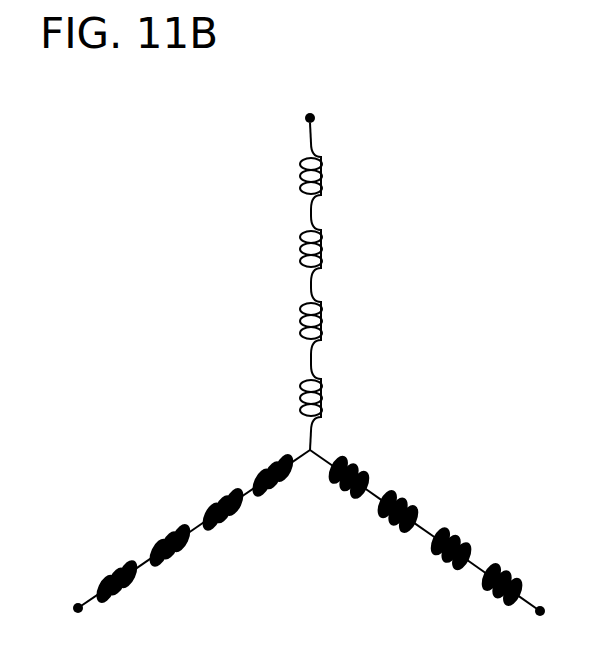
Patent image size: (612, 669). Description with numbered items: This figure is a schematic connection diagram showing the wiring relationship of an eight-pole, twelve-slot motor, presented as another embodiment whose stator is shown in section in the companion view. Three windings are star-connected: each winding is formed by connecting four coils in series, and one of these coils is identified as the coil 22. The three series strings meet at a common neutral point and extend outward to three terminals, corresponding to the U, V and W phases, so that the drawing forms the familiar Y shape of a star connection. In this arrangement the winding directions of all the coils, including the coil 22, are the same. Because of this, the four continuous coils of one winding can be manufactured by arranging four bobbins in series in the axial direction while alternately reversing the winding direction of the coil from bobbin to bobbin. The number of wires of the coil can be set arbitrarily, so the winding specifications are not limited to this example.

The coil 22 is at (290, 224).